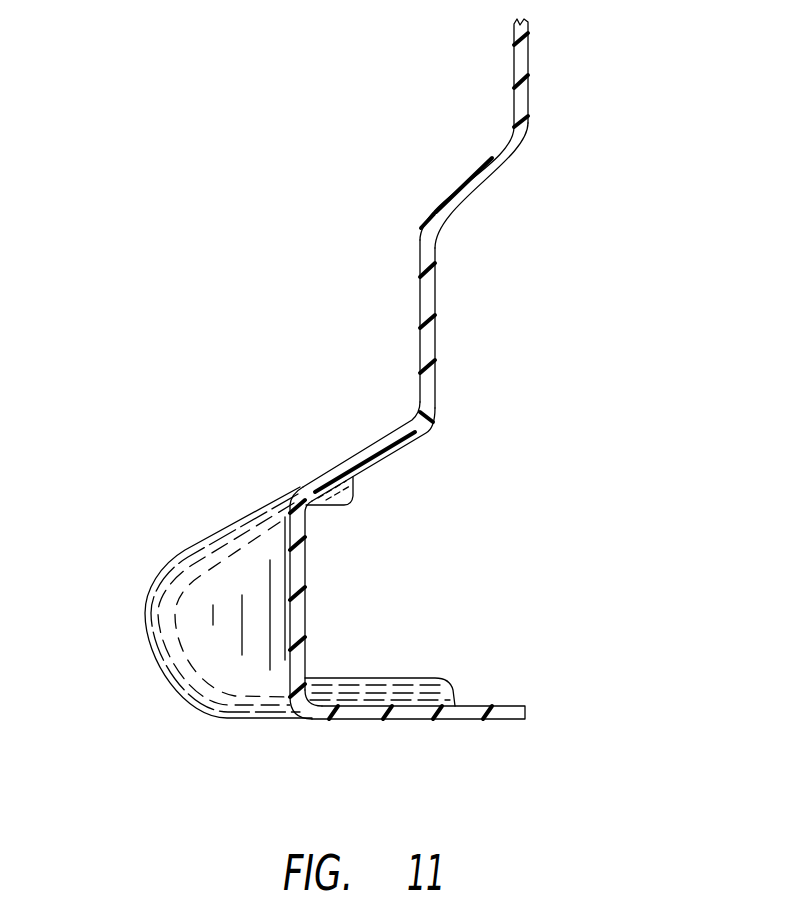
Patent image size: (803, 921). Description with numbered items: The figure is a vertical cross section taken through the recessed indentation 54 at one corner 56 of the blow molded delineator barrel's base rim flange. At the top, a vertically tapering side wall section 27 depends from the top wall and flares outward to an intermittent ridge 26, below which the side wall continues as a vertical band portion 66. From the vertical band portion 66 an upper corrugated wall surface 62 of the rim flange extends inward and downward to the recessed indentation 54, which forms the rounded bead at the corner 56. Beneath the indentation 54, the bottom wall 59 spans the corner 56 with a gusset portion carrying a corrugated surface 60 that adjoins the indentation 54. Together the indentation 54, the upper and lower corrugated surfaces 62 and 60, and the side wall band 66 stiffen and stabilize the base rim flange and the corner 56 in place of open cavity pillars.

The side wall section 27 is at (514, 58).
The intermittent ridge 26 is at (509, 135).
The vertical band portion 66 is at (420, 292).
The upper corrugated wall surface 62 is at (342, 465).
The recessed indentation 54 is at (290, 533).
The corner 56 is at (145, 610).
The corrugated surface 60 is at (342, 721).
The bottom wall 59 is at (498, 721).